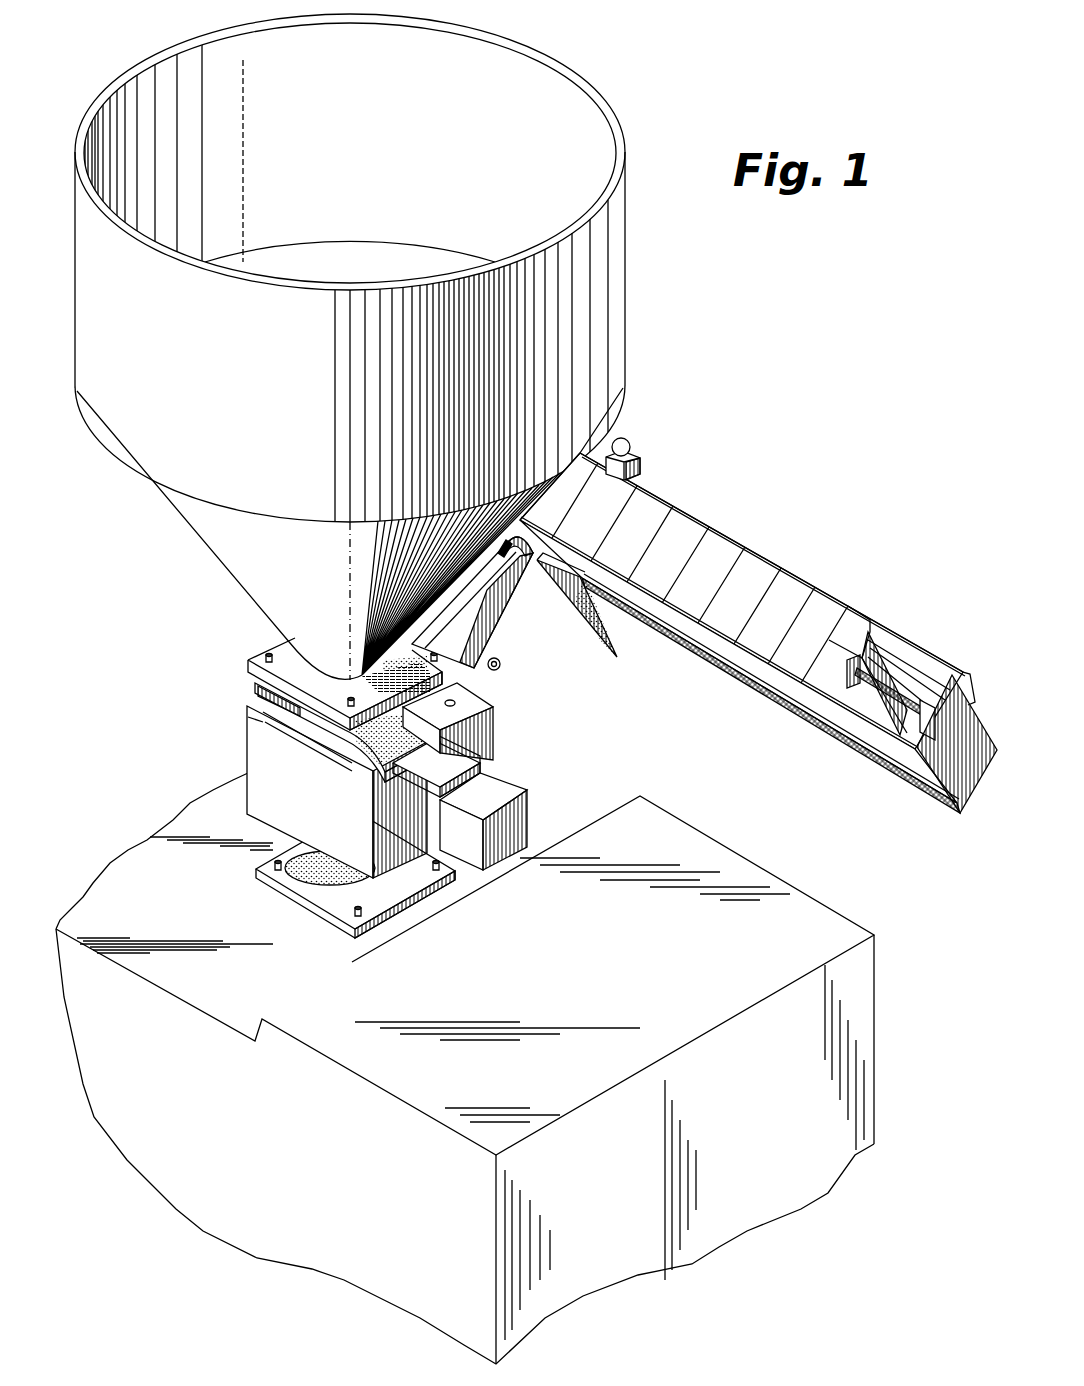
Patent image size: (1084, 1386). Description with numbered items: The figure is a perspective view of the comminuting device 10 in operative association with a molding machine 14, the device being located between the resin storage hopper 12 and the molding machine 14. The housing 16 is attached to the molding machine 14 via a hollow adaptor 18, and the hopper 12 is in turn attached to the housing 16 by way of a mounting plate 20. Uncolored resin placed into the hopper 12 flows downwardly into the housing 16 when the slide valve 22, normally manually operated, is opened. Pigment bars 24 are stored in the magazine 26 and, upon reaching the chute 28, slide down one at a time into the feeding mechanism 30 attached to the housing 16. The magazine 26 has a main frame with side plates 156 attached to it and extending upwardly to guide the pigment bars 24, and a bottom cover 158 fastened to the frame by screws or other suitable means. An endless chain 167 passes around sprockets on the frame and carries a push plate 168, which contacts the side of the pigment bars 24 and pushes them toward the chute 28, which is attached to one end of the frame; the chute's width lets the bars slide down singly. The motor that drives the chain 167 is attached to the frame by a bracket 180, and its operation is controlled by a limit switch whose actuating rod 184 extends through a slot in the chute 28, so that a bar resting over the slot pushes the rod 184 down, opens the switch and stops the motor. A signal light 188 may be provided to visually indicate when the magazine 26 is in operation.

The comminuting device 10 is at (237, 728).
The resin storage hopper 12 is at (608, 259).
The molding machine 14 is at (127, 853).
The housing 16 is at (251, 767).
The hollow adaptor 18 is at (339, 872).
The mounting plate 20 is at (283, 651).
The slide valve 22 is at (455, 748).
The pigment bars 24 is at (467, 603).
The magazine 26 is at (793, 542).
The chute 28 is at (503, 583).
The feeding mechanism 30 is at (487, 692).
The side plates 156 is at (680, 505).
The bottom cover 158 is at (762, 695).
The endless chain 167 is at (902, 691).
The push plate 168 is at (875, 651).
The bracket 180 is at (538, 560).
The actuating rod 184 is at (508, 553).
The signal light 188 is at (625, 445).